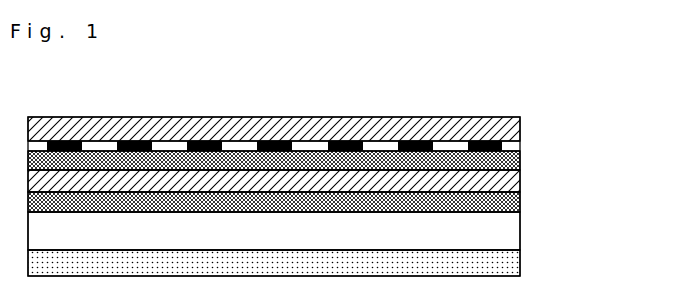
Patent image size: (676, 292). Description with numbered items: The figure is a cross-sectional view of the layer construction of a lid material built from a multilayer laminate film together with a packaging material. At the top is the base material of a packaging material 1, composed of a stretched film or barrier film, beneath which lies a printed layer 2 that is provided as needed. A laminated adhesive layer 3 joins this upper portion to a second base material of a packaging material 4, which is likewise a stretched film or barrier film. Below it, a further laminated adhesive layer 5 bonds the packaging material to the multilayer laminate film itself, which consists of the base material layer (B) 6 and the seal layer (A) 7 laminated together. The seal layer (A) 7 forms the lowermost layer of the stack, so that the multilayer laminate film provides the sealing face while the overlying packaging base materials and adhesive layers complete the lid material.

The base material of a packaging material 1 is at (521, 119).
The printed layer 2 is at (521, 147).
The laminated adhesive layer 3 is at (521, 151).
The base material of a packaging material 4 is at (521, 178).
The laminated adhesive layer 5 is at (521, 202).
The base material layer (B) 6 is at (505, 230).
The seal layer (A) 7 is at (505, 263).